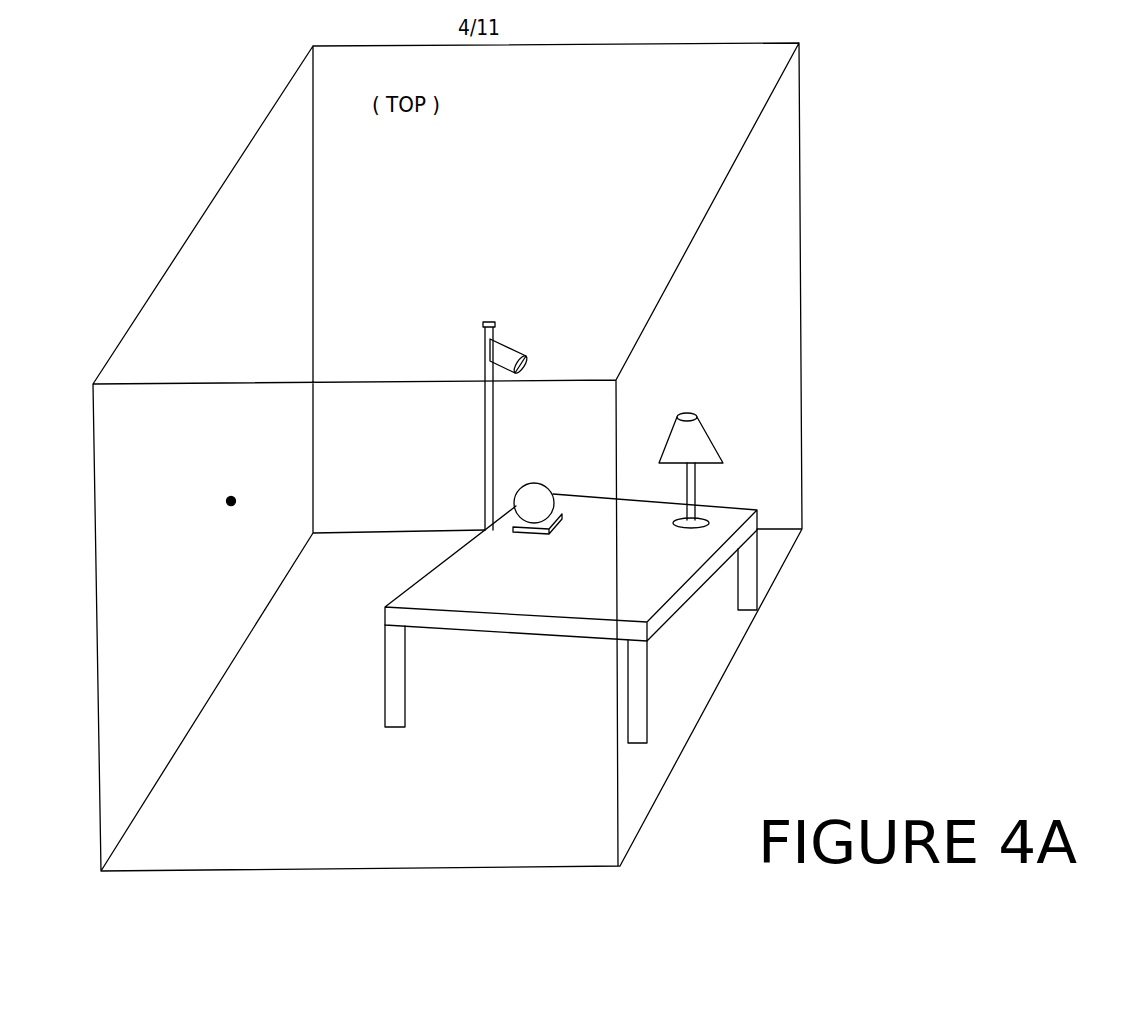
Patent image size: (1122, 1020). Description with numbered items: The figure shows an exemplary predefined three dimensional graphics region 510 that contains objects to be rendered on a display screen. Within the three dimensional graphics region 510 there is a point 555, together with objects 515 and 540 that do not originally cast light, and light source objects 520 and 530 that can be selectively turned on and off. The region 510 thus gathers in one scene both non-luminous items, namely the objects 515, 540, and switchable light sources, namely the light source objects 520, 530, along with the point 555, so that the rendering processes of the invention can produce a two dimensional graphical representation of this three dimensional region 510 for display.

The 3D graphics region 510 is at (792, 349).
The object 515 is at (527, 636).
The light source object 520 is at (703, 420).
The light source object 530 is at (502, 338).
The object 540 is at (528, 483).
The point 555 is at (231, 494).